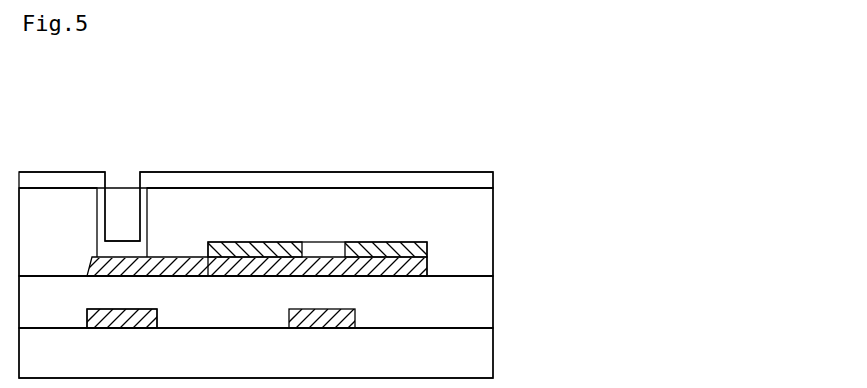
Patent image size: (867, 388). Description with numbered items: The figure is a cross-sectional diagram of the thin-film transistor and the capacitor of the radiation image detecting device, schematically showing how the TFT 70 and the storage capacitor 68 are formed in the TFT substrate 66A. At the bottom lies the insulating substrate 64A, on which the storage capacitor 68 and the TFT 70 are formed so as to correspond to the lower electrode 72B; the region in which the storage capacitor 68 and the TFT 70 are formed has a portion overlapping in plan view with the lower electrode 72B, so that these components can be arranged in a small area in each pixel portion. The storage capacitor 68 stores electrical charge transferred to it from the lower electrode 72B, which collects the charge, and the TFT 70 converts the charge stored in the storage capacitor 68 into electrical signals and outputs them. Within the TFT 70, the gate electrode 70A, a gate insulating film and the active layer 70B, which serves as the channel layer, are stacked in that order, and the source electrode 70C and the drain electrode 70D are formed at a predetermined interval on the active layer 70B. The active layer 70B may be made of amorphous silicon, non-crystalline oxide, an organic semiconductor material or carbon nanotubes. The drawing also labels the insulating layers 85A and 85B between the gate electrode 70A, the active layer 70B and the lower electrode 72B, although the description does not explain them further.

The TFT substrate 66A is at (460, 128).
The lower electrode 72B is at (495, 173).
The upper interlayer insulating film 85A is at (495, 227).
The lower interlayer insulating film 85B is at (495, 285).
The insulating substrate 64A is at (495, 356).
The TFT 70 is at (339, 205).
The active layer 70B is at (428, 265).
The source electrode 70C is at (388, 242).
The drain electrode 70D is at (273, 242).
The gate electrode 70A is at (356, 318).
The storage capacitor 68 is at (158, 335).